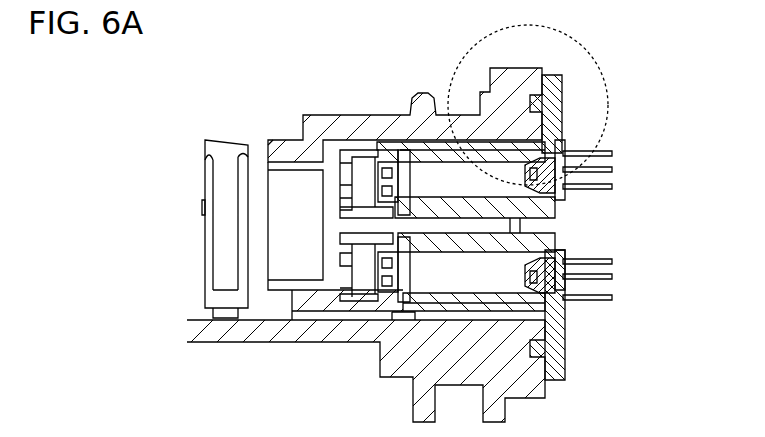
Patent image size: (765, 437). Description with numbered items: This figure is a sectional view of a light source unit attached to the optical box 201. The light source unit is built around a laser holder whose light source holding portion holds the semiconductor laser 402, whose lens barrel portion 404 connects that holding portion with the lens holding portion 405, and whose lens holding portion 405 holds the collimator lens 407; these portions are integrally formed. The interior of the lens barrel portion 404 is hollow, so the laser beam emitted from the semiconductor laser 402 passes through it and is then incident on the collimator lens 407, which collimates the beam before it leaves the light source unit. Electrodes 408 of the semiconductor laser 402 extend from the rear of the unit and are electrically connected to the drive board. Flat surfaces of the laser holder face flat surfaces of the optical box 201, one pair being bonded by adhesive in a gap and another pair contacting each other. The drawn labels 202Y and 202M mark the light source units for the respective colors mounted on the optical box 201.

The optical box 201 is at (347, 122).
The lens barrel portion 404 is at (437, 138).
The lens holding portion 405 is at (352, 174).
The collimator lens 407 is at (367, 150).
The semiconductor laser 402 is at (568, 198).
The electrodes 408 is at (612, 160).
The holding ring 202Y is at (563, 118).
The holding ring 202M is at (567, 343).